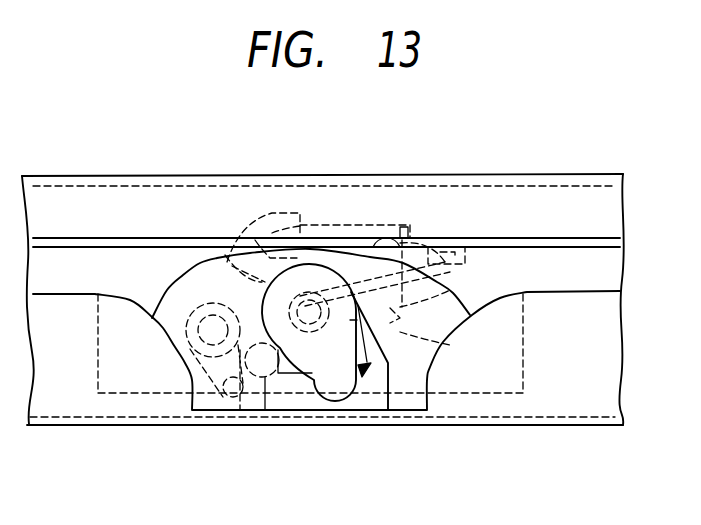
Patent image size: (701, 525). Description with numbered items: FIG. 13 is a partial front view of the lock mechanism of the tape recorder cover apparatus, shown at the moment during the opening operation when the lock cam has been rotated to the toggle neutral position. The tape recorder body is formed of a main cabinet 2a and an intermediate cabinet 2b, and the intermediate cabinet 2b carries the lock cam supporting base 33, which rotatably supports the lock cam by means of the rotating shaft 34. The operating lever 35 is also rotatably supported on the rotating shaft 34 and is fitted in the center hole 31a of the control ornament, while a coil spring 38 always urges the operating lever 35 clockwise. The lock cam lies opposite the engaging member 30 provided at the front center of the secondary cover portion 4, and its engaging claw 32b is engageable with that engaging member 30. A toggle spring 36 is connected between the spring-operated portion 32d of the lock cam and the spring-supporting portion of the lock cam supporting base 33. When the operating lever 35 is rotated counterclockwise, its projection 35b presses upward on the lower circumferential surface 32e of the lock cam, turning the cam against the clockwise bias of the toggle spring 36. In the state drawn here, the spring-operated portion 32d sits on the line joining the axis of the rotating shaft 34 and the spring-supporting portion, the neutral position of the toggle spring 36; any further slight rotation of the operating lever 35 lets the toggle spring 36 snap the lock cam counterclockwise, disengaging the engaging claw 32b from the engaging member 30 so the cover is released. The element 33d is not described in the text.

The main cabinet 2a is at (573, 400).
The intermediate cabinet 2b is at (530, 265).
The secondary cover portion 4 is at (577, 175).
The engaging member 30 is at (363, 186).
The center hole 31a is at (300, 375).
The engaging claw 32b is at (271, 213).
The spring-operated portion 32d is at (262, 380).
The lower circumferential surface 32e is at (450, 286).
The lock cam supporting base 33 is at (523, 395).
The projection 33d is at (240, 412).
The rotating shaft 34 is at (311, 300).
The operating lever 35 is at (336, 398).
The projection 35b is at (450, 345).
The toggle spring 36 is at (183, 324).
The spring 38 is at (252, 284).